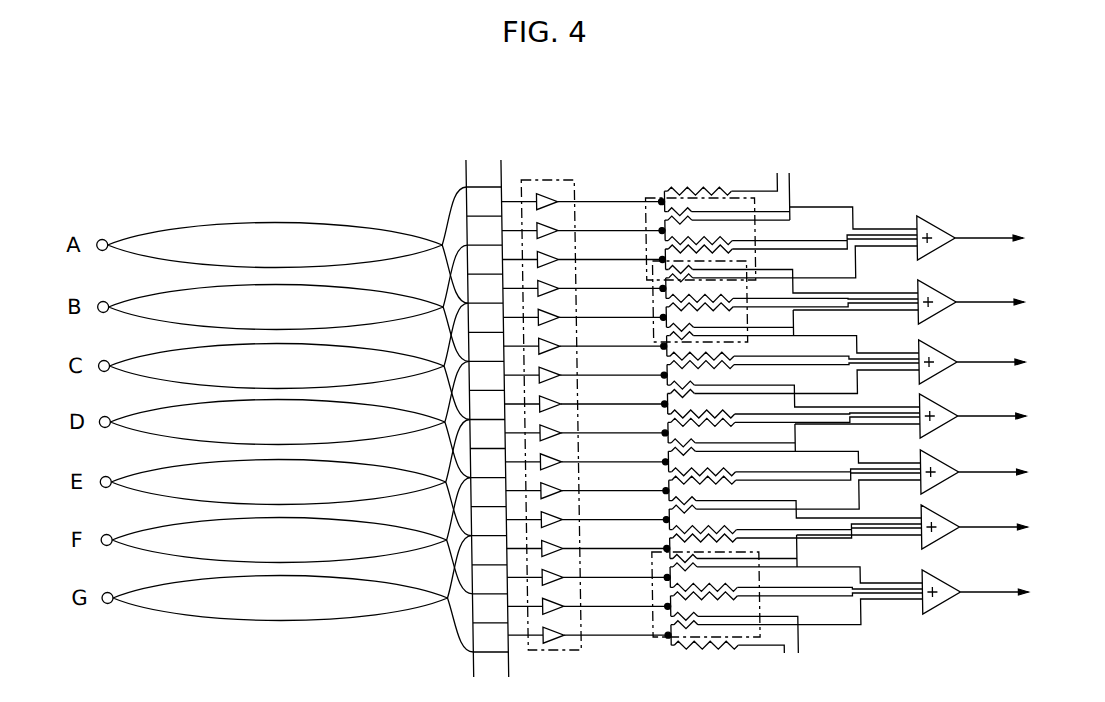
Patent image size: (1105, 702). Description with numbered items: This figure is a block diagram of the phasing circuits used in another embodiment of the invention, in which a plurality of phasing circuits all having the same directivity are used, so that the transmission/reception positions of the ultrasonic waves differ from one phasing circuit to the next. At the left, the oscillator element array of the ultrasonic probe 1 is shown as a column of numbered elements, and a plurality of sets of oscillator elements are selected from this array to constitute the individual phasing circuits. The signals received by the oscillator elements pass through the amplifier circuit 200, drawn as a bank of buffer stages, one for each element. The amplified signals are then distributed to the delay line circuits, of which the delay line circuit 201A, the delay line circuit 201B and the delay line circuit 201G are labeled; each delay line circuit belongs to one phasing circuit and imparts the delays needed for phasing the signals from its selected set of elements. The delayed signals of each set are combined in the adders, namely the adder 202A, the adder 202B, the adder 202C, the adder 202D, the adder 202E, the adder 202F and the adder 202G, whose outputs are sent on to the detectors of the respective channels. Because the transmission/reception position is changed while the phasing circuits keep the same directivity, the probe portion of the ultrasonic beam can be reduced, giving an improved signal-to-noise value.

The ultrasonic probe 1 is at (483, 160).
The amplifier circuit 200 is at (538, 180).
The delay line circuit 201A is at (647, 237).
The delay line circuit 201B is at (652, 297).
The delay line circuit 201G is at (647, 584).
The adder 202A is at (936, 227).
The adder 202B is at (936, 291).
The adder 202C is at (936, 351).
The adder 202D is at (936, 405).
The adder 202E is at (936, 461).
The adder 202F is at (936, 516).
The adder 202G is at (936, 581).